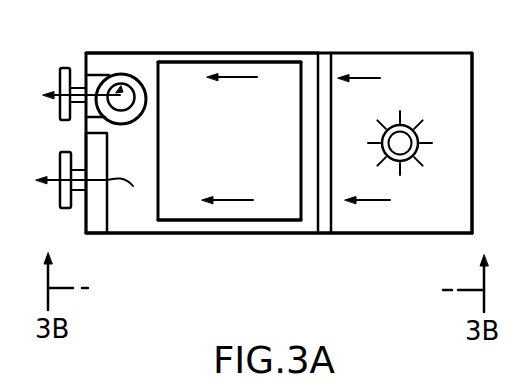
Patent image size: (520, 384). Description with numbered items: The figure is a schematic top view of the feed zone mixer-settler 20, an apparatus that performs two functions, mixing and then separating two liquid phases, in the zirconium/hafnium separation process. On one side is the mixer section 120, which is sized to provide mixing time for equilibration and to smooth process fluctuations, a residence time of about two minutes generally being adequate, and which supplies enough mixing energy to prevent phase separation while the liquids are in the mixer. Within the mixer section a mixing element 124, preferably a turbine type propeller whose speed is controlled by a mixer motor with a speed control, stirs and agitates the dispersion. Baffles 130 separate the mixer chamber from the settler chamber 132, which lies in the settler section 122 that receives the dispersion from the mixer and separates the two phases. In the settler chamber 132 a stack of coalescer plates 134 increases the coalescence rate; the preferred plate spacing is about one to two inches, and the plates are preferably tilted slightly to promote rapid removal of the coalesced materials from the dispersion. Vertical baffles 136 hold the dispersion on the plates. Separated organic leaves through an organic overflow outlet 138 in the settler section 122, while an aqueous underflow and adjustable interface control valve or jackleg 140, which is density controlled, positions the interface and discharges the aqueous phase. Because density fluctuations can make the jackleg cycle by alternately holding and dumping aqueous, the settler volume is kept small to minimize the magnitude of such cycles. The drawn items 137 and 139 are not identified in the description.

The feed zone mixer-settler 20 is at (367, 53).
The mixer section 120 is at (474, 78).
The settler section 122 is at (172, 53).
The mixing element 124 is at (413, 157).
The baffles 130 is at (333, 70).
The settler chamber 132 is at (240, 233).
The stack of coalescer plates 134 is at (252, 165).
The vertical baffles 136 is at (218, 62).
The exhaust duct 137 is at (104, 167).
The organic overflow outlet 138 is at (66, 209).
The fan disk 139 is at (60, 78).
The aqueous underflow and adjustable interface control valve 140 is at (118, 74).